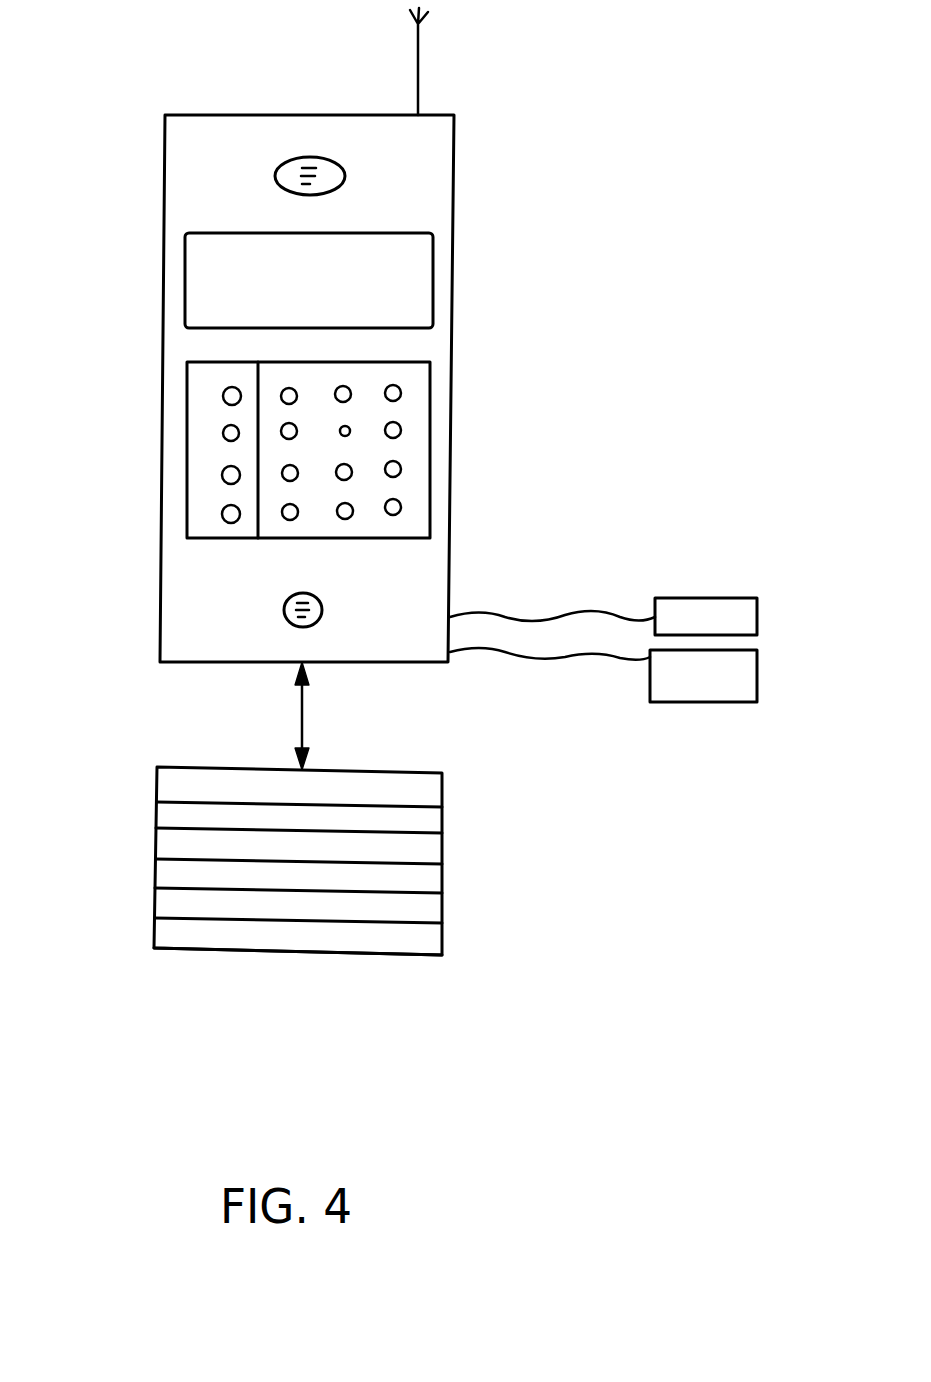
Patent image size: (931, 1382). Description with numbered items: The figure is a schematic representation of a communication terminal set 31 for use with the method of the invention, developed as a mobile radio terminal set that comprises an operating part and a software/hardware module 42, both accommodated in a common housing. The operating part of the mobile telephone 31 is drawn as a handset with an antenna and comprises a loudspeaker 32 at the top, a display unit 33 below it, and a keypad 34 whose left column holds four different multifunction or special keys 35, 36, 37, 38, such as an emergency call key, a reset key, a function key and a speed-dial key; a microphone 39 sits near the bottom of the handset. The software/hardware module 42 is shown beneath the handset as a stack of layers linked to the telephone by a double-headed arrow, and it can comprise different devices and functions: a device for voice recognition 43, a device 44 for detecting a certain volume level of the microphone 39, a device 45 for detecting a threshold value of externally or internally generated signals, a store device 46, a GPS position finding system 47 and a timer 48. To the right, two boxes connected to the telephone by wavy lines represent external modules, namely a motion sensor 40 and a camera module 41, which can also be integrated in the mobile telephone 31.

The communication terminal set 31 is at (458, 140).
The loudspeaker 32 is at (345, 178).
The display unit 33 is at (425, 262).
The keypad 34 is at (436, 380).
The multifunction or special key 35 is at (222, 395).
The multifunction or special key 36 is at (222, 433).
The multifunction or special key 37 is at (222, 475).
The multifunction or special key 38 is at (222, 512).
The microphone 39 is at (322, 607).
The motion sensor 40 is at (757, 613).
The camera module 41 is at (757, 677).
The software/hardware module 42 is at (150, 785).
The device for voice recognition 43 is at (437, 790).
The device for detecting a volume level 44 is at (437, 822).
The device for detecting a threshold value 45 is at (437, 851).
The store device 46 is at (437, 883).
The GPS position finding system 47 is at (437, 913).
The timer 48 is at (437, 940).